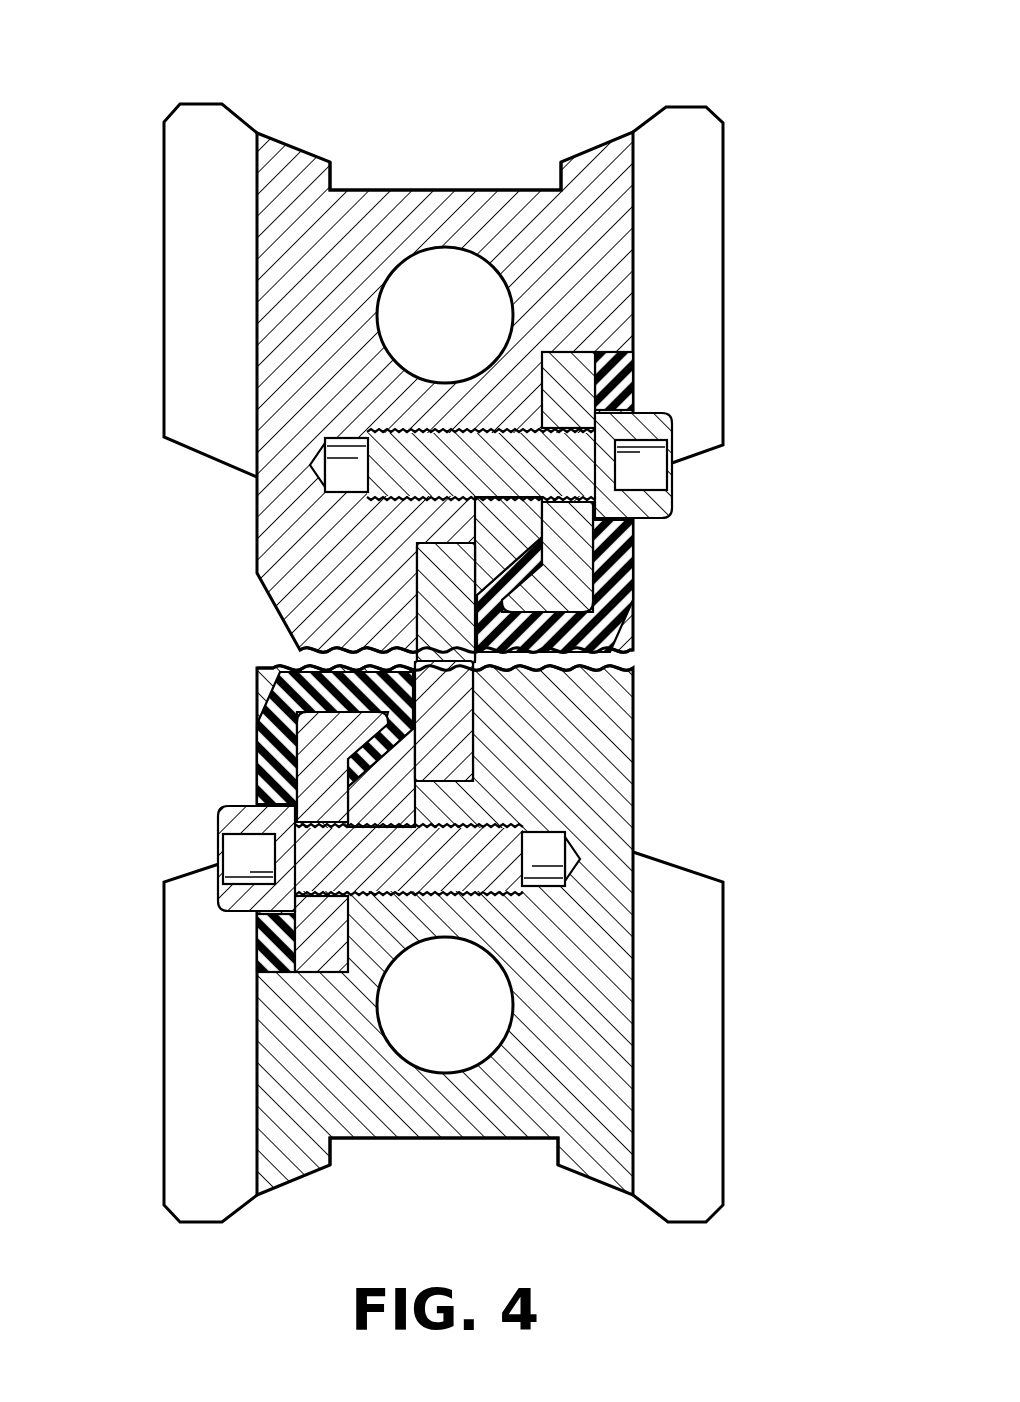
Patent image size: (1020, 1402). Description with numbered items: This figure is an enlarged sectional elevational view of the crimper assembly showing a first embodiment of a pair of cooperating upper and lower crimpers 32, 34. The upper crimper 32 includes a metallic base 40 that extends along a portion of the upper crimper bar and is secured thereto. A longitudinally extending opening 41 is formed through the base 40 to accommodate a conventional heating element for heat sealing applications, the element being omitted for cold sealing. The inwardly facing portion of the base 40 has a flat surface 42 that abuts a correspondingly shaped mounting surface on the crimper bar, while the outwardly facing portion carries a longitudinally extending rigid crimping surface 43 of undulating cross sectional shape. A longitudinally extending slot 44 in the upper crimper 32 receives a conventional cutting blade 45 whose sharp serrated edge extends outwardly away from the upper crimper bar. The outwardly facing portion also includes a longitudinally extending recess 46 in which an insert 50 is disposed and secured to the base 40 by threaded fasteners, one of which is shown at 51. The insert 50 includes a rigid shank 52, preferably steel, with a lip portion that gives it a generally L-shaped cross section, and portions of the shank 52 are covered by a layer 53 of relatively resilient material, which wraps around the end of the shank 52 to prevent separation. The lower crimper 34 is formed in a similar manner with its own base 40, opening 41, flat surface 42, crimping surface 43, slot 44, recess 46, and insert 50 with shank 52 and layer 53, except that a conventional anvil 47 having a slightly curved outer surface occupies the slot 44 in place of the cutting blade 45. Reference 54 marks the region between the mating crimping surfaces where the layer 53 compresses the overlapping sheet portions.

The upper crimper 32 is at (758, 118).
The lower crimper 34 is at (760, 1186).
The metallic base 40 is at (280, 365).
The longitudinally extending opening 41 is at (447, 252).
The flat surface 42 is at (372, 190).
The rigid crimping surface 43 is at (330, 655).
The longitudinally extending slot 44 is at (420, 573).
The cutting blade 45 is at (420, 610).
The longitudinally extending recess 46 is at (548, 352).
The anvil 47 is at (470, 705).
The insert 50 is at (240, 740).
The threaded fastener 51 is at (668, 418).
The shank 52 is at (312, 760).
The layer of relatively resilient material 53 is at (290, 710).
The gap 54 is at (340, 660).